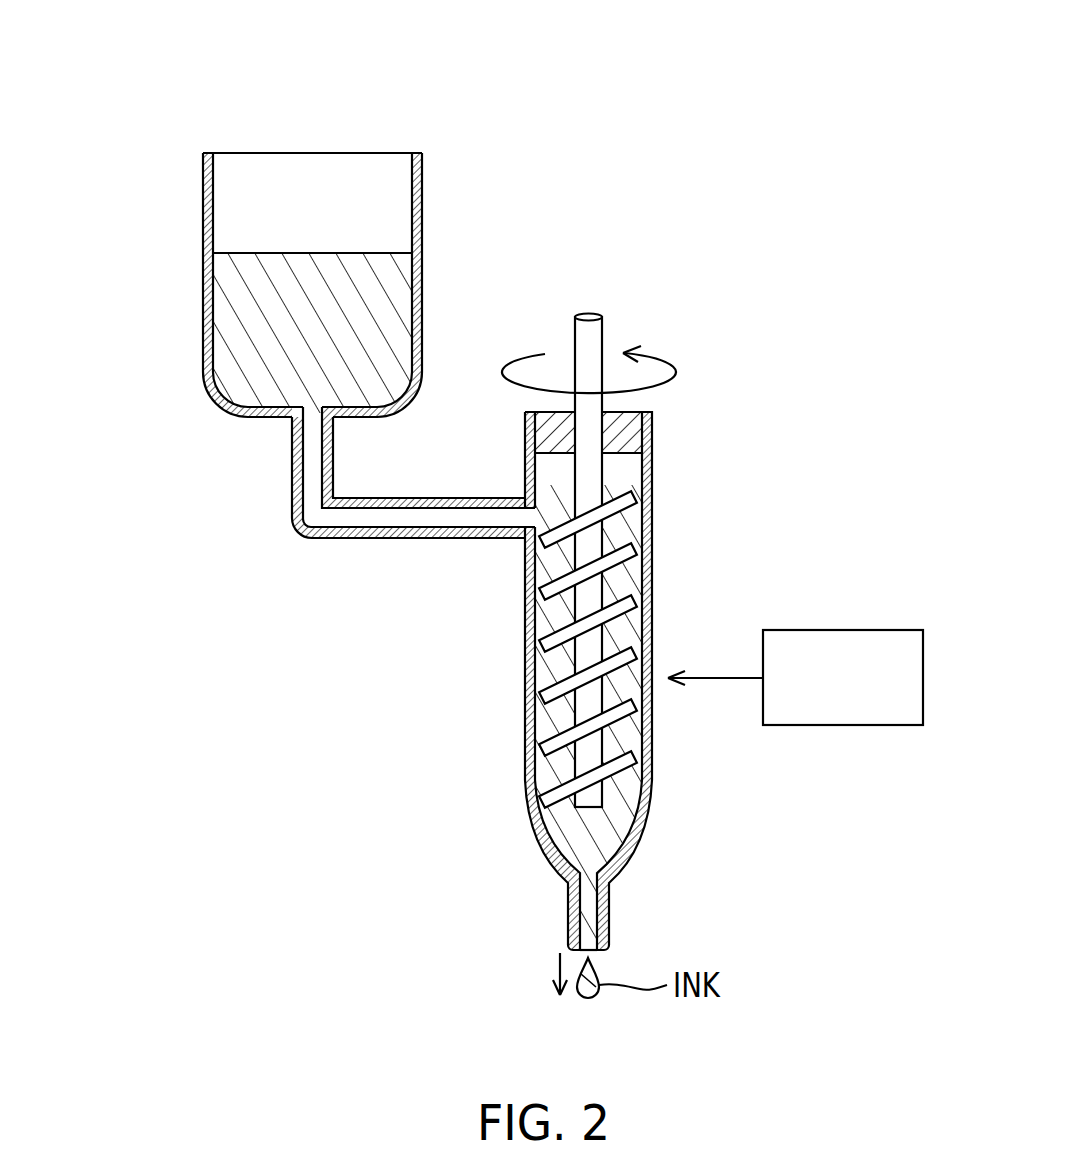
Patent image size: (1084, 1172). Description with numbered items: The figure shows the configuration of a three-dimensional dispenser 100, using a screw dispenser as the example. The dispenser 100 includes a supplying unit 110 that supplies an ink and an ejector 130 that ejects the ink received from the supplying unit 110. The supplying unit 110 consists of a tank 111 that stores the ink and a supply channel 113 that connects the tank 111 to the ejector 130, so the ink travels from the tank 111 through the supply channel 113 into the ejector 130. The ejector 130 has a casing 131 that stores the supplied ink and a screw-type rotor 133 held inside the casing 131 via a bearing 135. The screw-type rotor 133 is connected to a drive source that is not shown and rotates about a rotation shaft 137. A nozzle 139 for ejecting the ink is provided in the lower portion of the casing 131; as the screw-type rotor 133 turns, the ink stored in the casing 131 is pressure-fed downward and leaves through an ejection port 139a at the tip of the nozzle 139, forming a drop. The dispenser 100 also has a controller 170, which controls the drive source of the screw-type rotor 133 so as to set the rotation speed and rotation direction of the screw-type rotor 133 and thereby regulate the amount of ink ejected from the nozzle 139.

The 3D dispenser 100 is at (683, 157).
The supplying unit 110 is at (447, 287).
The tank 111 is at (205, 196).
The supply channel 113 is at (295, 494).
The ejector 130 is at (480, 647).
The casing 131 is at (526, 736).
The screw-type rotor 133 is at (648, 714).
The bearing 135 is at (620, 438).
The rotation shaft 137 is at (603, 340).
The nozzle 139 is at (570, 912).
The ejection port 139a is at (590, 950).
The controller 170 is at (880, 630).